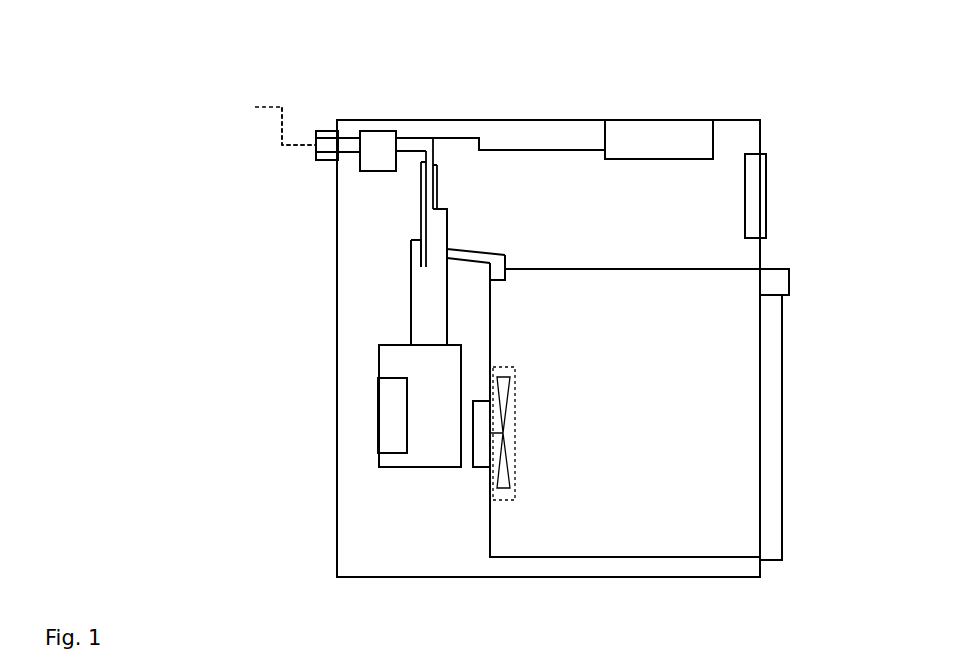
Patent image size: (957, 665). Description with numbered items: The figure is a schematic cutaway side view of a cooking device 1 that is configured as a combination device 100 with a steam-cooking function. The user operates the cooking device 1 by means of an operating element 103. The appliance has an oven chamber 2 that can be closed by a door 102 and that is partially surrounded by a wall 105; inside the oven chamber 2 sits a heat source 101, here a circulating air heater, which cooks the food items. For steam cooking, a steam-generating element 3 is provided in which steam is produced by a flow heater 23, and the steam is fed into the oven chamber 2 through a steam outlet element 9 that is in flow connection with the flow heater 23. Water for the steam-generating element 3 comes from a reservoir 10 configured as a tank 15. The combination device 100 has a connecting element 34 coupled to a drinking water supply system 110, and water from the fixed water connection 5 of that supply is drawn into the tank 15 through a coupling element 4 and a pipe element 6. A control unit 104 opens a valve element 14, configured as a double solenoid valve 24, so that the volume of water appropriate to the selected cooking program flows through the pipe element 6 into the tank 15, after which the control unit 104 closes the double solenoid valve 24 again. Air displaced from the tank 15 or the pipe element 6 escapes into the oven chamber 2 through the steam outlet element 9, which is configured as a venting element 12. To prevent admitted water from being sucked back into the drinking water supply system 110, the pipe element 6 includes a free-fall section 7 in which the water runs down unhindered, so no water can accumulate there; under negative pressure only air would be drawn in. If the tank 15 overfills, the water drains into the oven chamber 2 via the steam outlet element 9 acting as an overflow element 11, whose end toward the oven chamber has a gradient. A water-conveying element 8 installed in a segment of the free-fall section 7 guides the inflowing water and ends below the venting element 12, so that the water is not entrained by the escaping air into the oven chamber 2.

The cooking device 1 is at (112, 26).
The combination device 100 is at (133, 69).
The drinking water supply system 110 is at (256, 105).
The fixed water connection 5 is at (280, 132).
The connecting element 34 is at (324, 128).
The valve element 14 is at (378, 143).
The double solenoid valve 24 is at (418, 112).
The free-fall section 7 is at (432, 223).
The water-conveying element 8 is at (411, 268).
The pipe element 6 is at (411, 312).
The steam outlet element 9 is at (480, 257).
The overflow element 11 is at (480, 257).
The venting element 12 is at (595, 255).
The coupling element 4 is at (350, 225).
The steam-generating element 3 is at (350, 364).
The flow heater 23 is at (387, 420).
The reservoir 10 is at (425, 453).
The tank 15 is at (300, 441).
The heat source 101 is at (532, 405).
The wall 105 is at (492, 538).
The control unit 104 is at (665, 140).
The operating element 103 is at (754, 207).
The door 102 is at (768, 478).
The oven chamber 2 is at (732, 536).